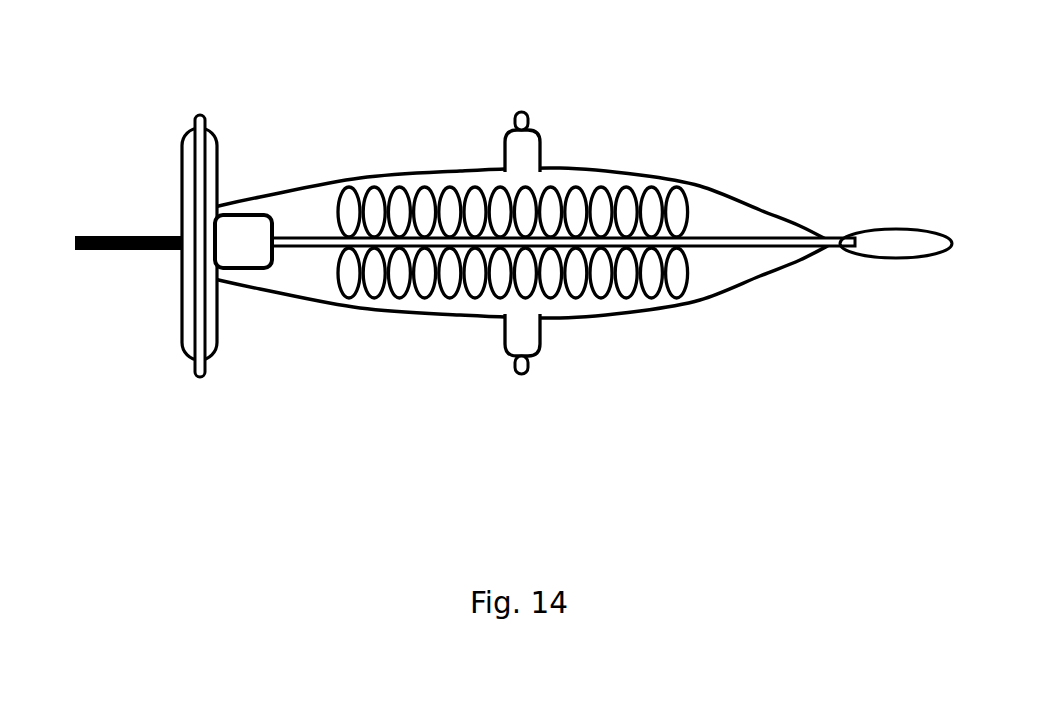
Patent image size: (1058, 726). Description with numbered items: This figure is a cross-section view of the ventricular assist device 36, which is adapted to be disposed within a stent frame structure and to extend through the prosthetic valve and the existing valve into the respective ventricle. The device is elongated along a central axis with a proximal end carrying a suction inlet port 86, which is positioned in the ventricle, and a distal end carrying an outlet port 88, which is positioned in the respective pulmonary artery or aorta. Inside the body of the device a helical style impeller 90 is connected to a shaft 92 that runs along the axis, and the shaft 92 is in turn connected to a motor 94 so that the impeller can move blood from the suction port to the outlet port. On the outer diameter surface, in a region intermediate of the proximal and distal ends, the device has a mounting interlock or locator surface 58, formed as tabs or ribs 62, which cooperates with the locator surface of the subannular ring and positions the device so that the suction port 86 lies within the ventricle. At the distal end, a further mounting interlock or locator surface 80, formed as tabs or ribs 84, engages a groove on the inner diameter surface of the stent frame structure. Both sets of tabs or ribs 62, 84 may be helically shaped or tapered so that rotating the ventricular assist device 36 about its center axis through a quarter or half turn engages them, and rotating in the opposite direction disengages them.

The ventricular assist device 36 is at (633, 338).
The mounting interlock or locator surface 58 is at (582, 199).
The tabs or ribs 62 is at (530, 115).
The mounting interlock or locator surface 80 is at (222, 296).
The tabs or ribs 84 is at (205, 377).
The suction inlet port 86 is at (900, 158).
The helical style impeller 90 is at (897, 238).
The outlet port 88 is at (251, 164).
The motor 94 is at (233, 240).
The shaft 92 is at (773, 243).